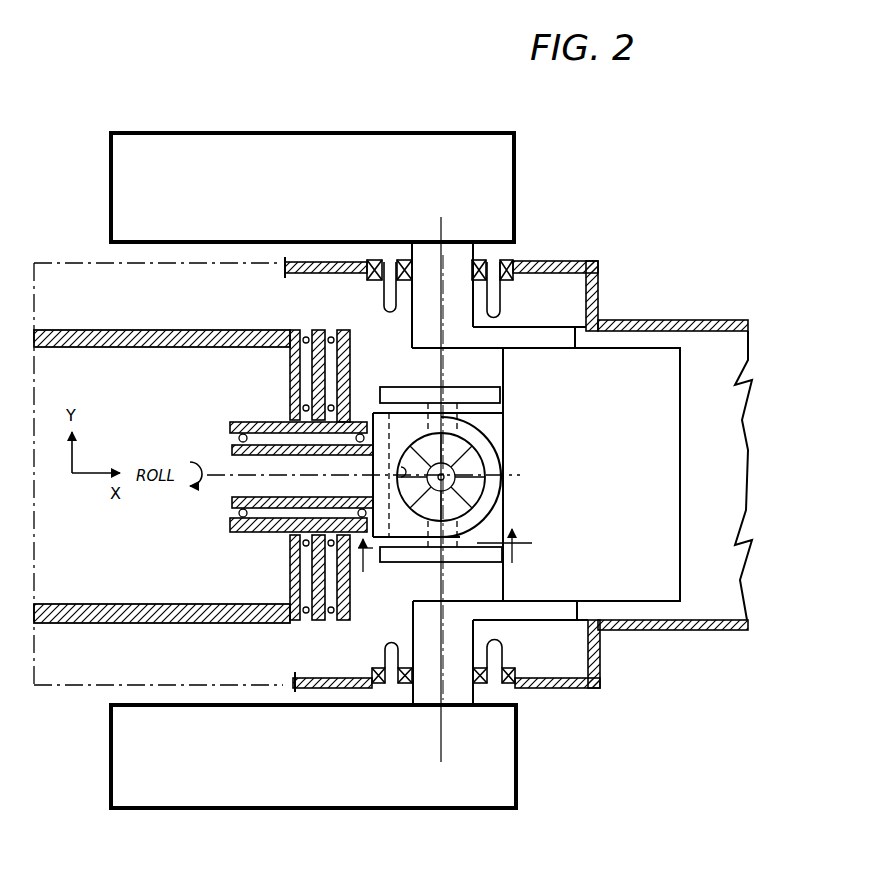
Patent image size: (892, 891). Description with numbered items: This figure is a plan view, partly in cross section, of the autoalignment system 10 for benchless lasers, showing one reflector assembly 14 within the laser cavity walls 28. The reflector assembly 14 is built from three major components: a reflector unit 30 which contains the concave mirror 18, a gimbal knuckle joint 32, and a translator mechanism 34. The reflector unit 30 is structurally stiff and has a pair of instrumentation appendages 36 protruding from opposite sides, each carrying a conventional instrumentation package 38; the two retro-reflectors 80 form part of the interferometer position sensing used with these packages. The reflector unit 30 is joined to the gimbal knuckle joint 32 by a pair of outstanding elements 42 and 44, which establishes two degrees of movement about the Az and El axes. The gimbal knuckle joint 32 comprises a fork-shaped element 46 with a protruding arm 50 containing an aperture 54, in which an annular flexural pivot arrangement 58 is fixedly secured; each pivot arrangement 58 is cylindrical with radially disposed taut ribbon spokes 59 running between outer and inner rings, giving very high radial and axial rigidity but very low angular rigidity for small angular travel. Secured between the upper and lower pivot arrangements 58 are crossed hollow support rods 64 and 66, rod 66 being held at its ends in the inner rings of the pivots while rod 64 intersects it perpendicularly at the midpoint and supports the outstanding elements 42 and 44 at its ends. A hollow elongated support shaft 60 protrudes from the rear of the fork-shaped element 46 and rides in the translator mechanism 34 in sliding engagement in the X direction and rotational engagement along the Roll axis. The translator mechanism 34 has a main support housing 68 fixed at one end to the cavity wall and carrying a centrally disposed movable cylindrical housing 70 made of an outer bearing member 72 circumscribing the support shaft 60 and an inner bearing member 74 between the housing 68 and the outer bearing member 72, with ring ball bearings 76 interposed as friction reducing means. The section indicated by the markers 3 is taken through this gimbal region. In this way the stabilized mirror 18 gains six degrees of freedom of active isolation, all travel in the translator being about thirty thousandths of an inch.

The antenna positioner assembly 10 is at (623, 718).
The reflector assembly 14 is at (636, 622).
The concave mirror 18 is at (684, 480).
The laser cavity walls 28 is at (746, 405).
The reflector unit 30 is at (632, 553).
The gimbal knuckle joint 32 is at (392, 366).
The translator mechanism 34 is at (300, 634).
The instrumentation appendages 36 is at (470, 633).
The instrumentation package 38 is at (375, 138).
The outstanding element 42 is at (382, 393).
The outstanding element 44 is at (397, 577).
The fork-shaped element 46 is at (504, 516).
The protruding arm 50 is at (404, 525).
The aperture 54 is at (400, 477).
The annular flexural pivot arrangement 58 is at (478, 432).
The taut ribbon spokes 59 is at (480, 477).
The hollow elongated support shaft 60 is at (230, 493).
The hollow support rod 64 is at (450, 438).
The hollow support rod 66 is at (435, 468).
The main support housing 68 is at (83, 604).
The movable cylindrically-shaped housing 70 is at (322, 326).
The outer bearing member 72 is at (238, 535).
The inner bearing member 74 is at (310, 622).
The ring ball bearings 76 is at (260, 378).
The retro-reflectors 80 is at (390, 258).
The section line 3- 3 is at (445, 562).
The El axis El is at (447, 233).
The Az axis Az is at (456, 470).